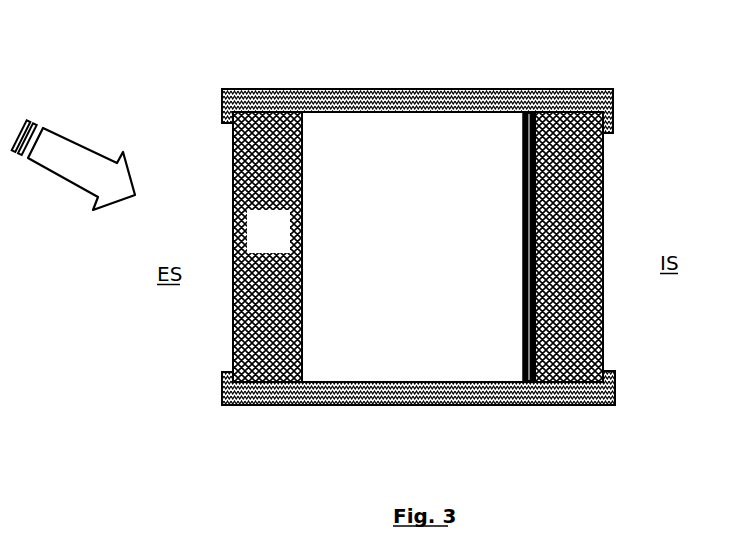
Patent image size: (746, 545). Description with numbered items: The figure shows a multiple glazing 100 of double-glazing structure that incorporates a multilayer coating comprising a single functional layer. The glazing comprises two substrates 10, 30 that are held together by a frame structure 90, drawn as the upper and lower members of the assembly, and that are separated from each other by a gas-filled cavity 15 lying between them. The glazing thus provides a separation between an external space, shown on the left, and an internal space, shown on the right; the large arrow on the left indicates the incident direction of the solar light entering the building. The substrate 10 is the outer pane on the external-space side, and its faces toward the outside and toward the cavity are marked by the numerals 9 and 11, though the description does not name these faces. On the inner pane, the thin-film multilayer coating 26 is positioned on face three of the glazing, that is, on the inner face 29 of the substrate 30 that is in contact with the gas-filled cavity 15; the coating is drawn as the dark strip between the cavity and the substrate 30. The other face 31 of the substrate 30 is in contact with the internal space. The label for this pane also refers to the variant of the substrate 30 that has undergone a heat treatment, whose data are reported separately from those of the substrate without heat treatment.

The multiple glazing 100 is at (126, 96).
The frame structure 90 is at (302, 112).
The substrate 10 is at (279, 244).
The exterior surface of wall panel 9 is at (233, 351).
The interior surface of wall panel 11 is at (302, 315).
The gas-filled cavity 15 is at (421, 246).
The inner face of the substrate 29 is at (533, 340).
The substrate 30 is at (558, 133).
The other face of the substrate 31 is at (602, 307).
The thin-film multilayer coating 26 is at (528, 382).